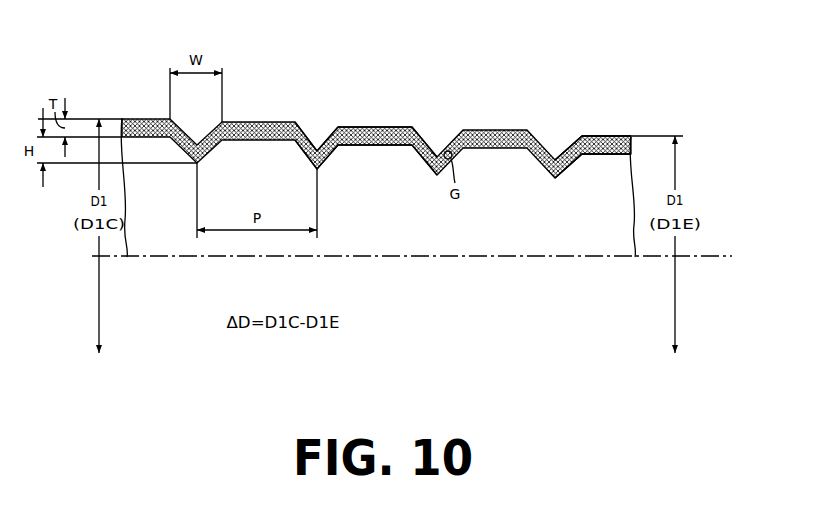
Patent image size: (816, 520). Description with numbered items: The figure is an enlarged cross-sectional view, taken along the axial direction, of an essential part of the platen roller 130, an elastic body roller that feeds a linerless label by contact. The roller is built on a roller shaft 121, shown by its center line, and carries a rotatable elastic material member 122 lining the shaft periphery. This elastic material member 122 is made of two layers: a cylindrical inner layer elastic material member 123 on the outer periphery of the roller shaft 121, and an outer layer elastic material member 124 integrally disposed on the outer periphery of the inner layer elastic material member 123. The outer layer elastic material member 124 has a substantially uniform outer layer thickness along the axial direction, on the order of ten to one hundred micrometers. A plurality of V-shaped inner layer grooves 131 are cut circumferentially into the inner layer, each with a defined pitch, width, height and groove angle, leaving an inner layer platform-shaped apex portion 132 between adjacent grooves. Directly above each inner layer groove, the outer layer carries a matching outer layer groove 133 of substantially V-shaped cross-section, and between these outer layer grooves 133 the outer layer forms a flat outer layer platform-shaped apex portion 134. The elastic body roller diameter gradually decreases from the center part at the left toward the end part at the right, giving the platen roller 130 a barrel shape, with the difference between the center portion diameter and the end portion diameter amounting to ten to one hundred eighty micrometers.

The platen roller 130 is at (513, 107).
The inner layer grooves 131 is at (302, 145).
The inner layer platform-shaped apex portion 132 is at (385, 143).
The outer layer grooves 133 is at (324, 138).
The outer layer platform-shaped apex portion 134 is at (367, 123).
The elastic material member 122 is at (627, 78).
The inner layer elastic material member 123 is at (601, 182).
The outer layer elastic material member 124 is at (564, 143).
The roller shaft 121 is at (707, 257).